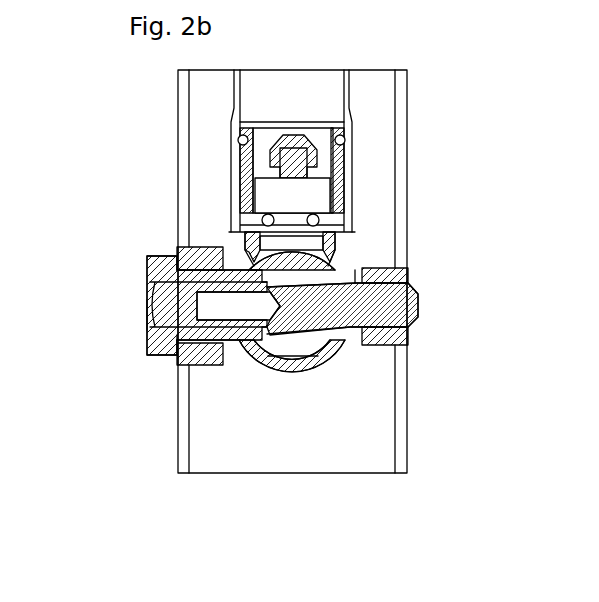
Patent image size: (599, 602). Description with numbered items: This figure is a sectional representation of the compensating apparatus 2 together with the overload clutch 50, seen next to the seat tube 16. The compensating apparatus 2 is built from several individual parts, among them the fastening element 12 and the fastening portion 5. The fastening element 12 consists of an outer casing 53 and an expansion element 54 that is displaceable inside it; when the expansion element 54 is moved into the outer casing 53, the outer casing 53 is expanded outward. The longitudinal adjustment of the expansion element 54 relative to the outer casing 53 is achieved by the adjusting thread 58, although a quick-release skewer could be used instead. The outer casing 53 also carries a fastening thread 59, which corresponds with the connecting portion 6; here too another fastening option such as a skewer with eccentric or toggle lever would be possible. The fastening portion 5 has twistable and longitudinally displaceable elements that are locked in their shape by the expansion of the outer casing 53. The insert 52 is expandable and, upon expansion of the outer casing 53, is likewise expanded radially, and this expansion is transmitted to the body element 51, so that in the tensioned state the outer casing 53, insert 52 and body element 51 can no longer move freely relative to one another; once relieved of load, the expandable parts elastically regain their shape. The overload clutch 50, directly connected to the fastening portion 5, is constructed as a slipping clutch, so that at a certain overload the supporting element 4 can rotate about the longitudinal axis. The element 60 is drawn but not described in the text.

The compensating apparatus 2 is at (425, 349).
The supporting element 4 is at (351, 99).
The fastening portion 5 is at (367, 257).
The connecting portion 6 is at (379, 347).
The fastening element 12 is at (135, 324).
The seat tube 16 is at (406, 103).
The overload clutch 50 is at (375, 155).
The body element 51 is at (347, 249).
The insert 52 is at (226, 207).
The outer casing 53 is at (158, 254).
The expansion element 54 is at (150, 298).
The adjusting thread 58 is at (172, 337).
The fastening thread 59 is at (180, 364).
The bearing block 60 is at (406, 285).